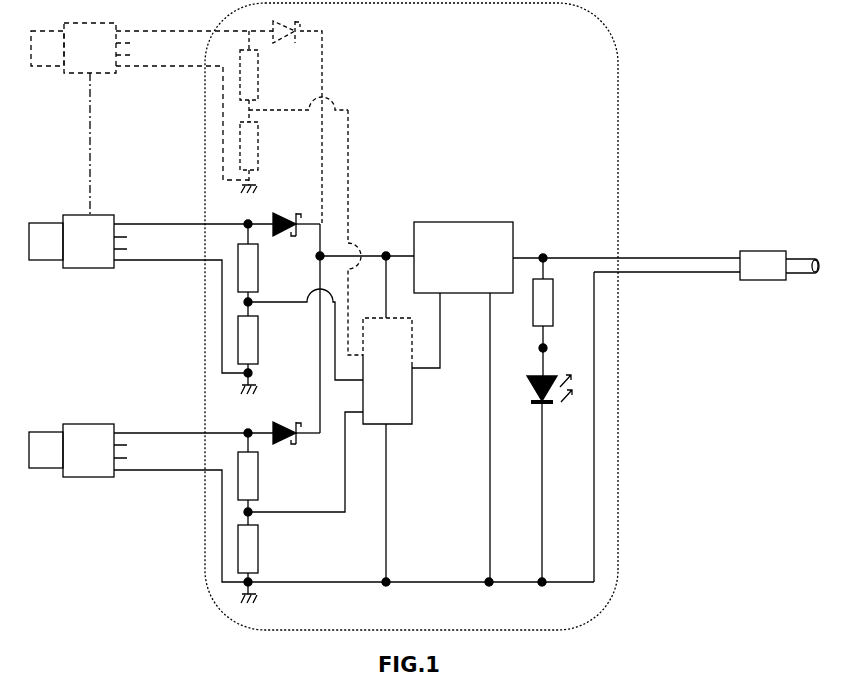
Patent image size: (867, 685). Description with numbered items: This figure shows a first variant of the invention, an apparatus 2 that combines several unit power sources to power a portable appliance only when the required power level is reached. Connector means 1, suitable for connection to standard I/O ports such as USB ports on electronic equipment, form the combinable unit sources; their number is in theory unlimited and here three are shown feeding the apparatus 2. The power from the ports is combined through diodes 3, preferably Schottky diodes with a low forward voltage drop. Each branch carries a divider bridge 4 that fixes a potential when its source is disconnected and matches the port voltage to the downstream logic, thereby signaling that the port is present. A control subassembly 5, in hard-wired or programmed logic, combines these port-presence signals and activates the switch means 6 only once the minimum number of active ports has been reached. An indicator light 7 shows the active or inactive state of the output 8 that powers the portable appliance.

The connector means 1 is at (100, 73).
The apparatus 2 is at (618, 103).
The diodes 3 is at (290, 15).
The divider bridge 4 is at (258, 110).
The control subassembly 5 is at (408, 424).
The switch means 6 is at (450, 222).
The indicator light 7 is at (527, 388).
The output 8 is at (760, 280).